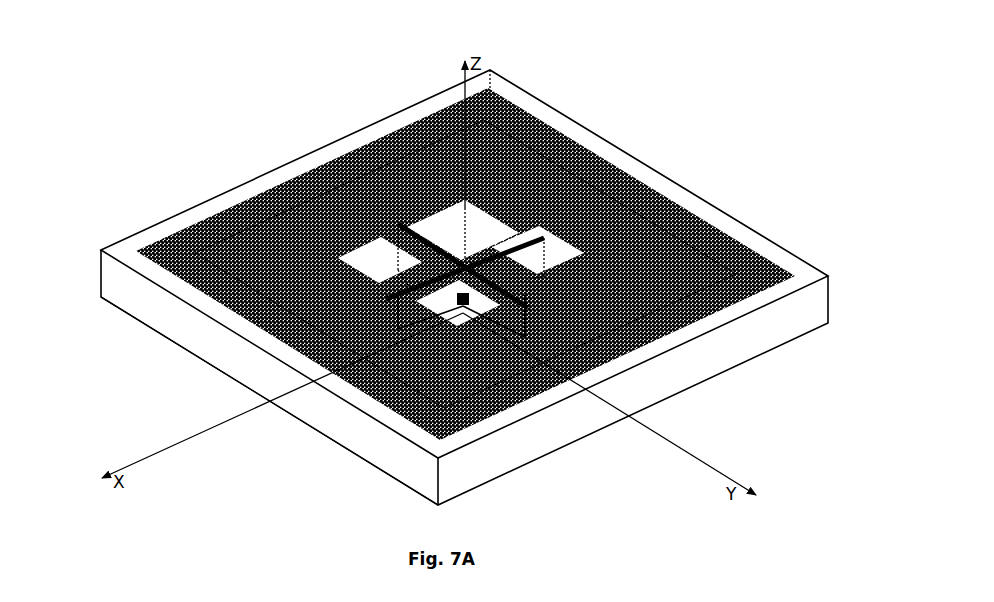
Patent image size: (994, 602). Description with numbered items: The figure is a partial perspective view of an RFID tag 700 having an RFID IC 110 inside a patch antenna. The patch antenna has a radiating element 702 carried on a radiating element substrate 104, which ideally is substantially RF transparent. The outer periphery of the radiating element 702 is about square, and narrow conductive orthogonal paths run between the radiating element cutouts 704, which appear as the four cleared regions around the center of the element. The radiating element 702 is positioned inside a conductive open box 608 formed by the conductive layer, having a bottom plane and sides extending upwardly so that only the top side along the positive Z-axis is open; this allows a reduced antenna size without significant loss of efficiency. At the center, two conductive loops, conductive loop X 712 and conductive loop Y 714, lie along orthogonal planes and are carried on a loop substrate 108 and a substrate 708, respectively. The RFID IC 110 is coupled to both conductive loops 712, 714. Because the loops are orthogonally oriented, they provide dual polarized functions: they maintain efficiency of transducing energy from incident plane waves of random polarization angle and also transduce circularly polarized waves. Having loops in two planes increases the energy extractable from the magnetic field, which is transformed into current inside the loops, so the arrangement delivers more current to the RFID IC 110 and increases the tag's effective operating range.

The RFID tag 700 is at (88, 61).
The radiating element 702 is at (262, 243).
The radiating element cutouts 704 is at (447, 215).
The radiating element substrate 104 is at (600, 136).
The loop substrate 108 is at (683, 192).
The substrate 708 is at (537, 240).
The conductive open box 608 is at (127, 292).
The conductive loop X 712 is at (390, 321).
The conductive loop Y 714 is at (517, 329).
The RFID IC 110 is at (455, 297).